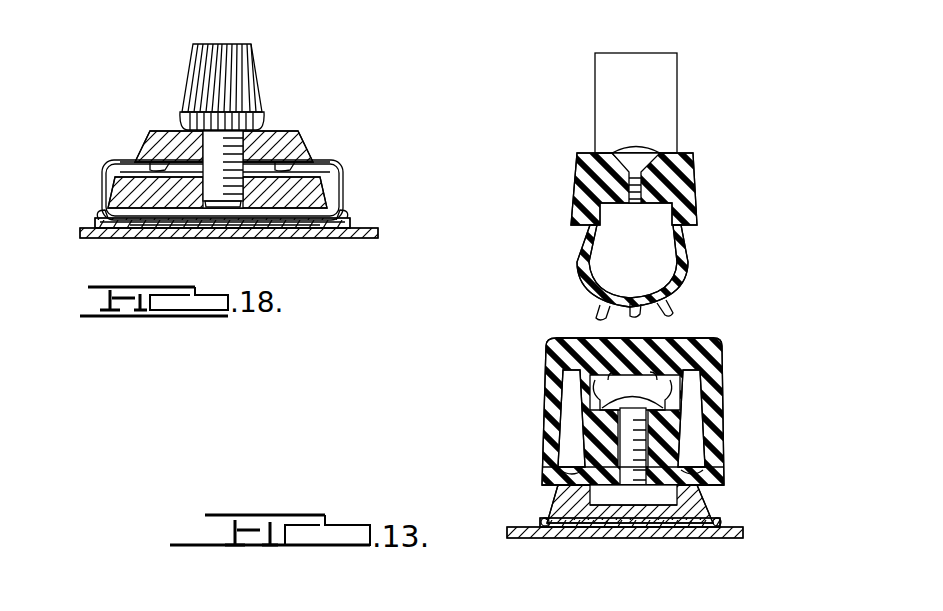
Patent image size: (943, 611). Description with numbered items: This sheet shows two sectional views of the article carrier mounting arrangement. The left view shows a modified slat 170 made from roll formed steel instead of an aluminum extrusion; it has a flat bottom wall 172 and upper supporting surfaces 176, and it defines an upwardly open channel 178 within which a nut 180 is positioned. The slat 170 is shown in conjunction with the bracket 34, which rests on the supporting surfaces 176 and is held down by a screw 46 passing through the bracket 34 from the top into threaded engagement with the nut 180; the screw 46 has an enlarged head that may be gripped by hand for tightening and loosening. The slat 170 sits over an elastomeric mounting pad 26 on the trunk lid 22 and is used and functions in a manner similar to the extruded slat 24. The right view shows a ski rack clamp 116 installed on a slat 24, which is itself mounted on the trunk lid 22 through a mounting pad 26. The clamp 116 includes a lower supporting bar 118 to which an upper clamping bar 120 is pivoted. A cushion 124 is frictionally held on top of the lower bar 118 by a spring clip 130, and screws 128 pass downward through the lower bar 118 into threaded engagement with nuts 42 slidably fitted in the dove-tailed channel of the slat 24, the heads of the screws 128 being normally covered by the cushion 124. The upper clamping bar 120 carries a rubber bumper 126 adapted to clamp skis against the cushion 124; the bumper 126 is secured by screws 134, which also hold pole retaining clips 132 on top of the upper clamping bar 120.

In FIG. 18, the trunk lid 22 is at (345, 236).
In FIG. 13, the trunk lid 22 is at (520, 540).
In FIG. 13, the slat 24 is at (555, 503).
In FIG. 18, the elastomeric mounting pad 26 is at (100, 226).
In FIG. 13, the elastomeric mounting pad 26 is at (722, 526).
In FIG. 18, the bracket 34 is at (300, 150).
In FIG. 13, the nut 42 is at (700, 506).
In FIG. 18, the screw 46 is at (255, 135).
In FIG. 13, the ski rack clamp 116 is at (724, 368).
In FIG. 13, the lower supporting bar 118 is at (720, 410).
In FIG. 13, the upper clamping bar 120 is at (695, 182).
In FIG. 18, the cushion 124 is at (115, 166).
In FIG. 13, the cushion 124 is at (680, 340).
In FIG. 13, the rubber bumper 126 is at (690, 262).
In FIG. 13, the screw 128 is at (630, 505).
In FIG. 13, the spring clip 130 is at (600, 392).
In FIG. 13, the pole retaining clip 132 is at (660, 88).
In FIG. 13, the screw 134 is at (645, 155).
In FIG. 18, the slat 170 is at (104, 185).
In FIG. 18, the flat bottom wall 172 is at (150, 228).
In FIG. 13, the flat bottom wall 172 is at (545, 472).
In FIG. 18, the upper supporting surface 176 is at (152, 150).
In FIG. 18, the channel 178 is at (190, 225).
In FIG. 18, the nut 180 is at (320, 188).